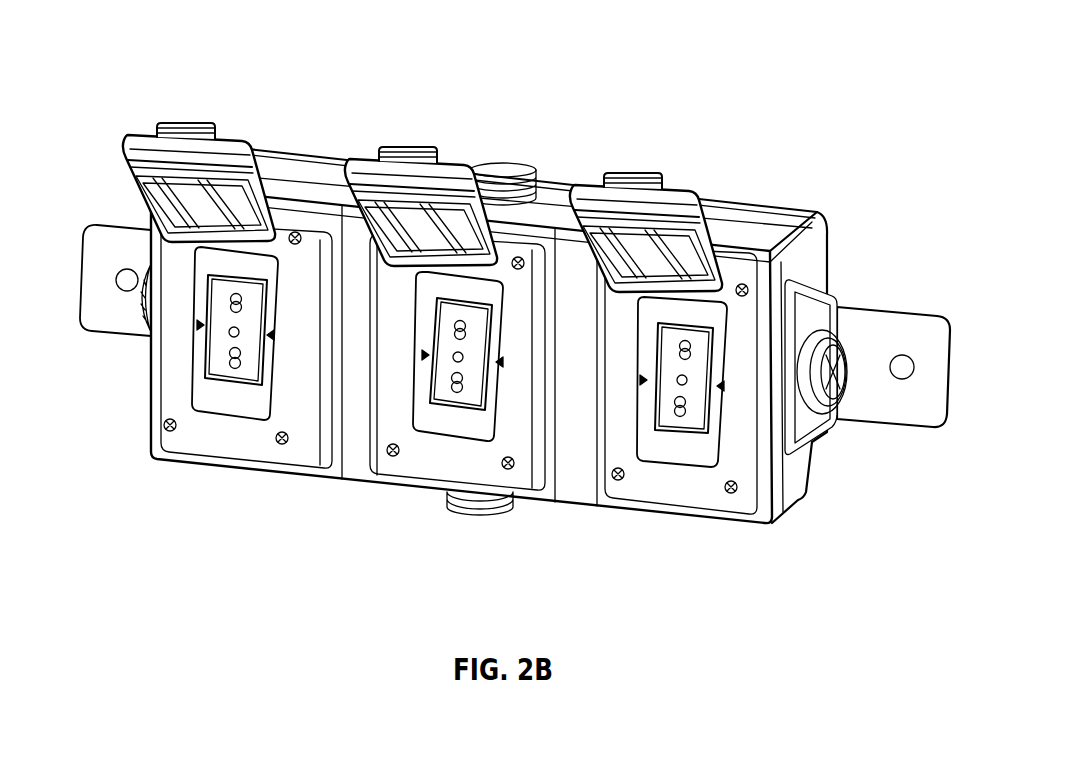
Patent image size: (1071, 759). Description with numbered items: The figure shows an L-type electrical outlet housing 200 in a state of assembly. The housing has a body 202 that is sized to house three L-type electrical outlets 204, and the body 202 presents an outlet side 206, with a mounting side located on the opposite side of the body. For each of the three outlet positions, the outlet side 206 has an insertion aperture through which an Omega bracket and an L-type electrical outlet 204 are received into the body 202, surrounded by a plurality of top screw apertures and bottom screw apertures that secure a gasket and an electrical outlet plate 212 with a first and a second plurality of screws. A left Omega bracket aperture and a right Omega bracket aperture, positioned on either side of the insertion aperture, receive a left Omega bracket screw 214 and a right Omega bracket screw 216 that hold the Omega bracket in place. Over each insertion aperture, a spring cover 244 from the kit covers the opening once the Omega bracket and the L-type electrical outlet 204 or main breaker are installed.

The L-type electrical outlet housing 200 is at (505, 316).
The body 202 is at (816, 252).
The L-type electrical outlet 204 is at (192, 388).
The outlet side 206 is at (357, 347).
The electrical outlet plate 212 is at (205, 357).
The left Omega bracket screw 214 is at (203, 322).
The right Omega bracket screw 216 is at (372, 176).
The spring cover 244 is at (140, 99).